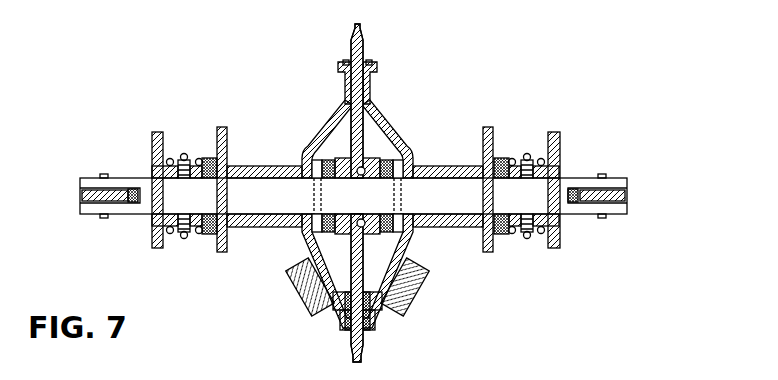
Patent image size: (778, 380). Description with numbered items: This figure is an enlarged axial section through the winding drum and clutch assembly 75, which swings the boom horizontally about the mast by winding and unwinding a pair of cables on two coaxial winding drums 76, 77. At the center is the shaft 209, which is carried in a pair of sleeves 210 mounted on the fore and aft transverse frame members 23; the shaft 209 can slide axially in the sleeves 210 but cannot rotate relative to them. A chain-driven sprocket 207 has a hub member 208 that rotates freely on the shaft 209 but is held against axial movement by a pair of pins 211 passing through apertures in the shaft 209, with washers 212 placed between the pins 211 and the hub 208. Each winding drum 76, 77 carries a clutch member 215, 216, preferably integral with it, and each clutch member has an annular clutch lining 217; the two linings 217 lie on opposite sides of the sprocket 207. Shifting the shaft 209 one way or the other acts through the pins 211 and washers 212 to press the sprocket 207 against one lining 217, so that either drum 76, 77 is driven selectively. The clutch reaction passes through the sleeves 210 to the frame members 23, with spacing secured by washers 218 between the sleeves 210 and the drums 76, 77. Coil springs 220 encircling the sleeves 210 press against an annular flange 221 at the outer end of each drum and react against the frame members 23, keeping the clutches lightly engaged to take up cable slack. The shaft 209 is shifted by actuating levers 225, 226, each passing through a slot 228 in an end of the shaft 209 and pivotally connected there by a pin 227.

The winding drum and clutch assembly 75 is at (434, 121).
The winding drum 76 is at (440, 168).
The winding drum 77 is at (259, 167).
The transversely disposed frame members 23 is at (154, 248).
The sprocket 207 is at (362, 32).
The hub member 208 is at (366, 136).
The shaft 209 is at (461, 205).
The sleeves 210 is at (187, 236).
The pins 211 is at (319, 161).
The washers 212 is at (392, 179).
The clutch member 215 is at (343, 105).
The clutch member 216 is at (372, 100).
The annular clutch lining 217 is at (348, 62).
The washers 218 is at (205, 186).
The coil springs 220 is at (185, 158).
The annular flange 221 is at (223, 251).
The actuating lever 225 is at (629, 198).
The actuating lever 226 is at (81, 199).
The pins 227 is at (104, 174).
The slot 228 is at (132, 189).